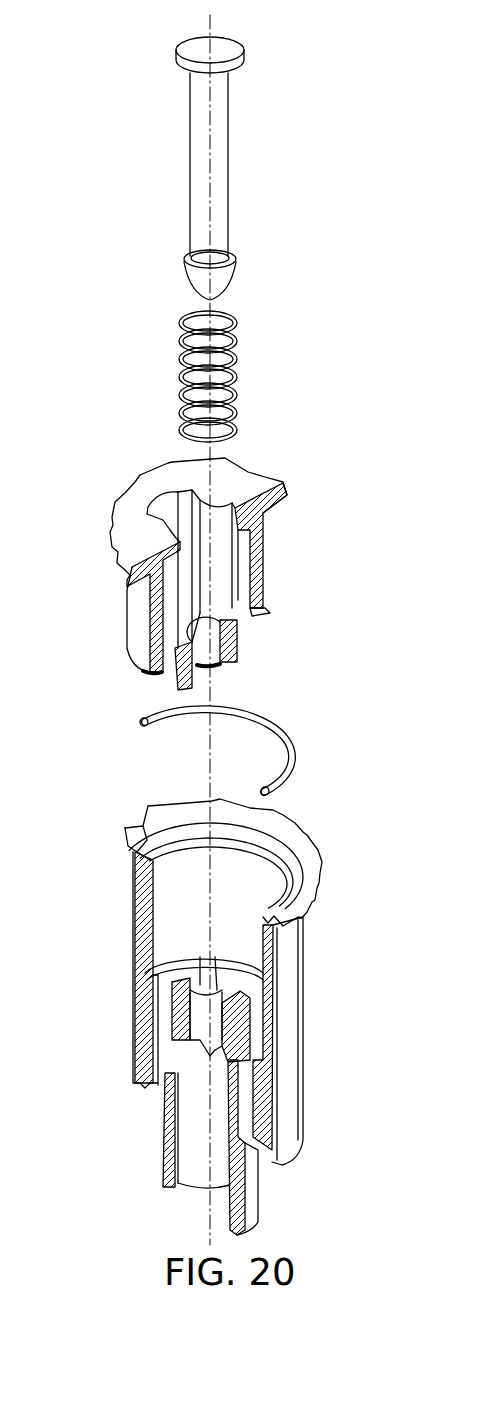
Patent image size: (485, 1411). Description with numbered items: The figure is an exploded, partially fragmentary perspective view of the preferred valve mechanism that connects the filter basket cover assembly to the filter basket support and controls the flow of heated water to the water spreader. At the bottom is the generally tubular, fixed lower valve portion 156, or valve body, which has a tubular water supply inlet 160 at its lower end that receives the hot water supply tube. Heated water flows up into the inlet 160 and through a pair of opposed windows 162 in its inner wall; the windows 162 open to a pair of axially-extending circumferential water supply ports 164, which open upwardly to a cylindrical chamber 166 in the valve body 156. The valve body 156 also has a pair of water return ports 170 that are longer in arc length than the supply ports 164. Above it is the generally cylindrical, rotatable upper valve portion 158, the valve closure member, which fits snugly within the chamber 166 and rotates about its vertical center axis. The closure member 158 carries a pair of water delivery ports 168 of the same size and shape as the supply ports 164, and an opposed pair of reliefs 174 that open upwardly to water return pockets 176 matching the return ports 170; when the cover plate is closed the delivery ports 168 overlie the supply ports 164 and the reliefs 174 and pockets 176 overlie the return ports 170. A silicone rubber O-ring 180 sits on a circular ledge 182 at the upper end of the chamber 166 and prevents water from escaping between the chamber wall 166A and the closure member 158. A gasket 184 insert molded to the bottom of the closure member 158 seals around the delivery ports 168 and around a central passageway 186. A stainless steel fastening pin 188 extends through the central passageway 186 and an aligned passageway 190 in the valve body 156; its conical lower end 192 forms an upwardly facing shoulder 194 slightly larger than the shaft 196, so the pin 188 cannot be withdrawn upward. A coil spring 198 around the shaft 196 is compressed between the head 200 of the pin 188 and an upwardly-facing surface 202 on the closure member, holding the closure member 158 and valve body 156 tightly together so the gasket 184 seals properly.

The lower valve portion 156 is at (211, 1017).
The upper valve portion 158 is at (205, 511).
The water supply inlet 160 is at (174, 1147).
The windows 162 is at (177, 1100).
The water supply ports 164 is at (248, 985).
The chamber 166 is at (170, 925).
The wall 166A is at (270, 898).
The water delivery ports 168 is at (170, 503).
The water return ports 170 is at (158, 1045).
The reliefs 174 is at (203, 589).
The water return pockets 176 is at (245, 545).
The O-ring 180 is at (278, 730).
The circular ledge 182 is at (160, 838).
The gasket 184 is at (147, 673).
The central passageway 186 is at (213, 628).
The fastening pin 188 is at (232, 163).
The passageway 190 is at (196, 1012).
The conical lower end 192 is at (186, 278).
The shoulder 194 is at (235, 251).
The shaft 196 is at (218, 188).
The coil spring 198 is at (238, 358).
The head 200 is at (232, 52).
The upwardly-facing surface 202 is at (238, 623).